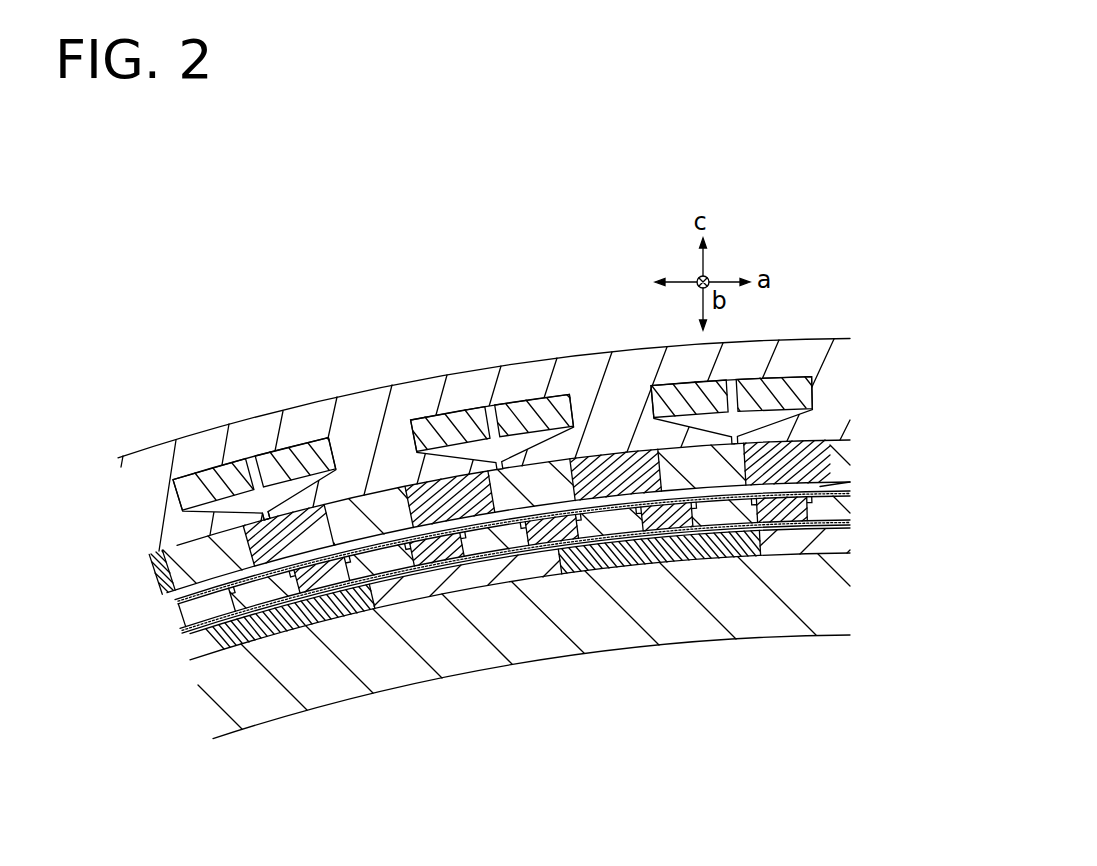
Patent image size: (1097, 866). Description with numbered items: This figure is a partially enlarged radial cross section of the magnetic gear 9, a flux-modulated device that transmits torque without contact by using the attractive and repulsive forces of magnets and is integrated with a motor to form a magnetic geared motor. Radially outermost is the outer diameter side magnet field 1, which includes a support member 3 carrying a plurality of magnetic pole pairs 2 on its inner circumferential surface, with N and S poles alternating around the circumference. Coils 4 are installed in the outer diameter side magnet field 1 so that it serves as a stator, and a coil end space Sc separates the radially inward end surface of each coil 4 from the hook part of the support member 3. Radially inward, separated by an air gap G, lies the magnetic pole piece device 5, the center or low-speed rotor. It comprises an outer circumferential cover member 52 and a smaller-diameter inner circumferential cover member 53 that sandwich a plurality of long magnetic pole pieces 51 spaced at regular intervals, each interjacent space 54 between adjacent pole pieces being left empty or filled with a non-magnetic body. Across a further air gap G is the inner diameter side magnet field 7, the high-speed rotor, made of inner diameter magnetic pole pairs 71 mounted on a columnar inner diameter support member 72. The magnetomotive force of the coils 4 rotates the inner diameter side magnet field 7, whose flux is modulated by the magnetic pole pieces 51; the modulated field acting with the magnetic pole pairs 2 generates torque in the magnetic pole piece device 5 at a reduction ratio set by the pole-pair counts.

The magnetic gear 9 is at (847, 235).
The outer diameter side magnet field 1 is at (262, 342).
The magnetic pole pairs 2 is at (432, 505).
The support member 3 is at (440, 392).
The coils 4 is at (318, 455).
The coil end space Sc is at (247, 507).
The air gap G is at (853, 525).
The magnetic pole piece device 5 is at (163, 600).
The magnetic pole pieces 51 is at (442, 547).
The outer circumferential cover member 52 is at (260, 570).
The inner circumferential cover member 53 is at (327, 588).
The interjacent space 54 is at (388, 552).
The inner diameter side magnet field 7 is at (172, 642).
The inner diameter magnetic pole pairs 71 is at (525, 567).
The inner diameter support member 72 is at (517, 640).